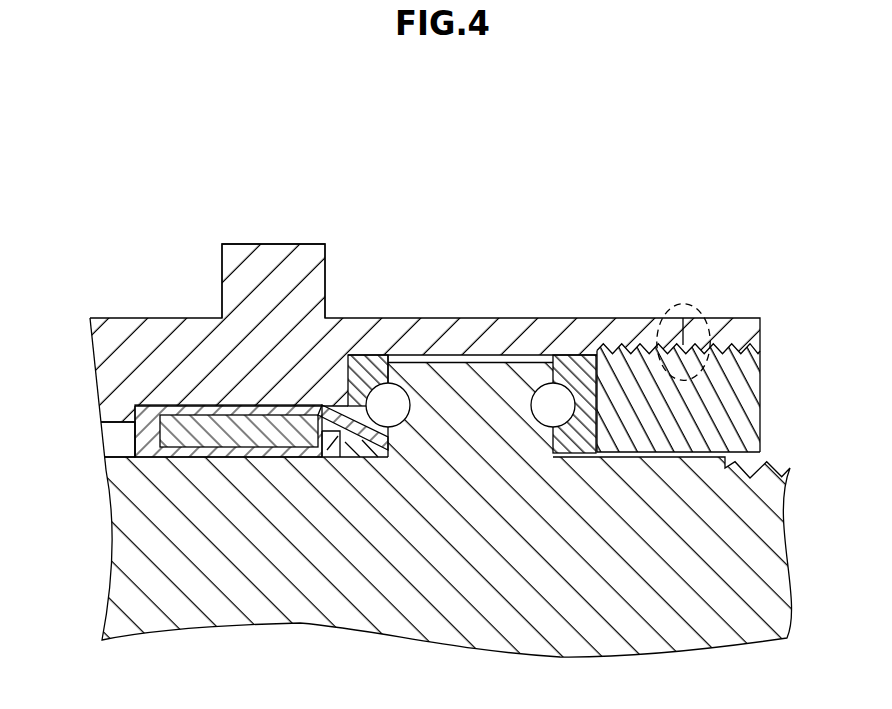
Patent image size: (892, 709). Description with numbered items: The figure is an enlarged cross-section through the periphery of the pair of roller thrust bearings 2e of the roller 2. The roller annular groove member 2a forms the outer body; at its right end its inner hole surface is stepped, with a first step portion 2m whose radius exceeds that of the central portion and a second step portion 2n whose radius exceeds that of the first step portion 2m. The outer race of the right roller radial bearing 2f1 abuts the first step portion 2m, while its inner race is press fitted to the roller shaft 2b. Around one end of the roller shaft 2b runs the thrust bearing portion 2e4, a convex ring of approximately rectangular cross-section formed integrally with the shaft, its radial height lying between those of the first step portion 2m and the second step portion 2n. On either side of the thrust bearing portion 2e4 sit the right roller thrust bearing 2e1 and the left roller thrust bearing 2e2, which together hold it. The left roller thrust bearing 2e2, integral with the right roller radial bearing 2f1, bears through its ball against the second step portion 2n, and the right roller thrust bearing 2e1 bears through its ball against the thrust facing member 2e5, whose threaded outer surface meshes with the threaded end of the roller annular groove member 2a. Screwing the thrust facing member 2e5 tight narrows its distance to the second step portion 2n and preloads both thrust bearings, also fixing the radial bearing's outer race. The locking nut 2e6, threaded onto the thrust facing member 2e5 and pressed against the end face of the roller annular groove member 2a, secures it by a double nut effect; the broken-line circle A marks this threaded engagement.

The housing (2A, 2B, 2C) 2 is at (514, 268).
The roller annular groove member 2a is at (282, 252).
The roller shaft 2b is at (113, 538).
The first step portion (step surface) 2m is at (157, 403).
The second step portion (step surface) 2n is at (365, 378).
The right roller radial bearing 2f1 is at (262, 460).
The bearing assembly 2e is at (550, 505).
The right roller thrust bearing (right rotation circle ring) 2e1 is at (535, 430).
The left roller thrust bearing (left rotation circle ring) 2e2 is at (400, 432).
The thrust bearing portion 2e4 is at (467, 377).
The thrust facing member 2e5 is at (660, 425).
The locking nut 2e6 is at (723, 337).
The detail region A is at (747, 378).